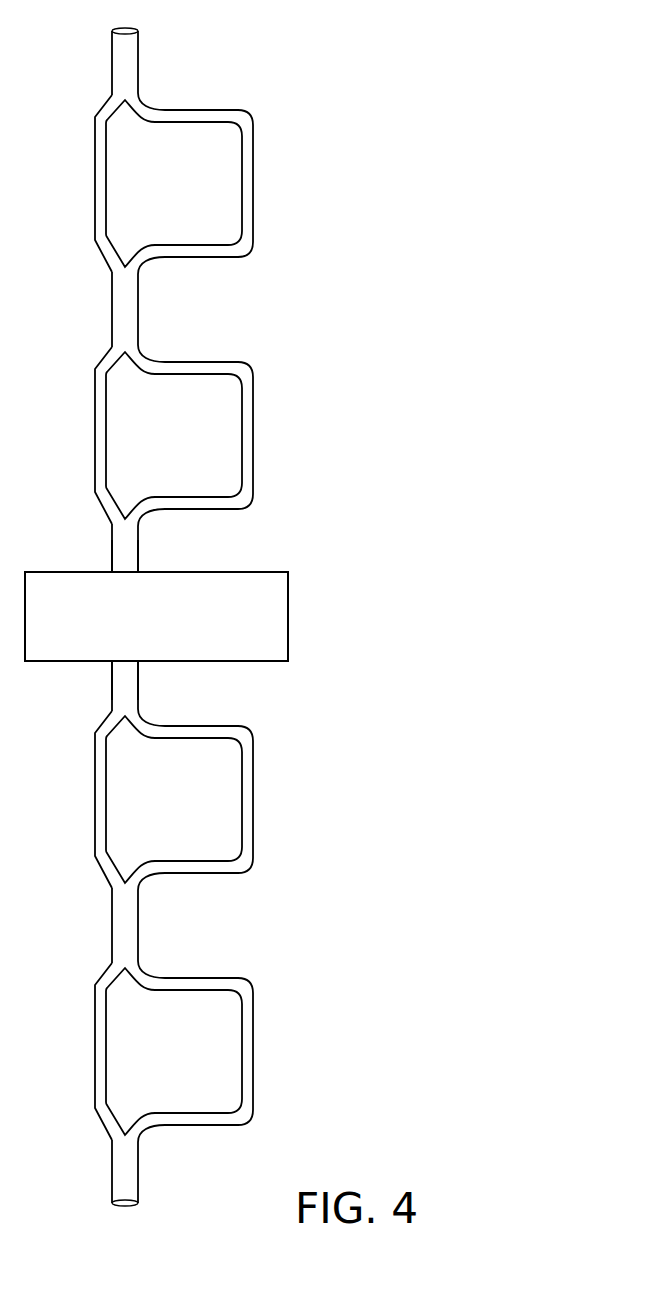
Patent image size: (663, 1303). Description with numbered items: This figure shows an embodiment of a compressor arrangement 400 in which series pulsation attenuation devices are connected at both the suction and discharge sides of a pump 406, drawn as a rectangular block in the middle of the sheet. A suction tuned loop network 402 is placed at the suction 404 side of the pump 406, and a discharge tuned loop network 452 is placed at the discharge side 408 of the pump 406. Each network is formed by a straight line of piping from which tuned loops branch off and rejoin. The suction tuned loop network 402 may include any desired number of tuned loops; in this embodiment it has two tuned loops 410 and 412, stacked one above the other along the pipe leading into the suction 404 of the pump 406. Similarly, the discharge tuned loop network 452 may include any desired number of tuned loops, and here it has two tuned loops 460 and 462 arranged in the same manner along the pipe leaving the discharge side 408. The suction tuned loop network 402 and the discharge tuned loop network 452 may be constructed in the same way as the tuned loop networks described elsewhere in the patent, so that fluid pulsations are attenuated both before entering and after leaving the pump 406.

The cooling system 400 is at (501, 126).
The suction tuned loop network 402 is at (112, 303).
The suction 404 is at (132, 571).
The pump 406 is at (176, 628).
The discharge side 408 is at (132, 662).
The tuned loop 410 is at (253, 184).
The tuned loop 412 is at (253, 438).
The discharge tuned loop network 452 is at (112, 932).
The tuned loop 460 is at (253, 798).
The tuned loop 462 is at (253, 1051).